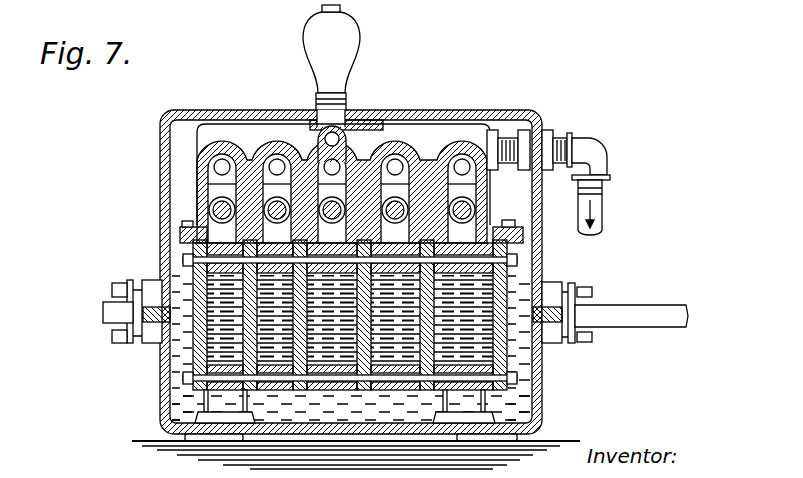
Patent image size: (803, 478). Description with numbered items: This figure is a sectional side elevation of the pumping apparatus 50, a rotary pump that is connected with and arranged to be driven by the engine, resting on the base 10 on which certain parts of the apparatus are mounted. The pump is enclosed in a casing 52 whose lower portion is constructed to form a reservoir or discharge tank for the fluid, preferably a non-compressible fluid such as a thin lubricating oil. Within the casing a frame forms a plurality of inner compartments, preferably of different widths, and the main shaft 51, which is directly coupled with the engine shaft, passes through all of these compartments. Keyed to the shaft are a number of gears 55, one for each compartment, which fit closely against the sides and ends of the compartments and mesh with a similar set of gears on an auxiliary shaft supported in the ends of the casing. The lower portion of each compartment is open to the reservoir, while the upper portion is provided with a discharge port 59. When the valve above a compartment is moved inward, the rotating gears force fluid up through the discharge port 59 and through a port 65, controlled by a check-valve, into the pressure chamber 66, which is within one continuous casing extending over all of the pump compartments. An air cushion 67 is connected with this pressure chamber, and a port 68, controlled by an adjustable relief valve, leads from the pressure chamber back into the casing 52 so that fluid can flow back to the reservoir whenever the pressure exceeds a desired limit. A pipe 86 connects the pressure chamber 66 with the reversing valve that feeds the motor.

The base 10 is at (537, 442).
The pumping apparatus 50 is at (537, 123).
The main shaft 51 is at (617, 312).
The casing 52 is at (177, 179).
The gears 55 is at (480, 347).
The discharge port 59 is at (215, 235).
The port 65 is at (274, 163).
The pressure chamber 66 is at (375, 132).
The air cushion 67 is at (320, 33).
The port 68 is at (312, 120).
The pipe 86 is at (597, 213).